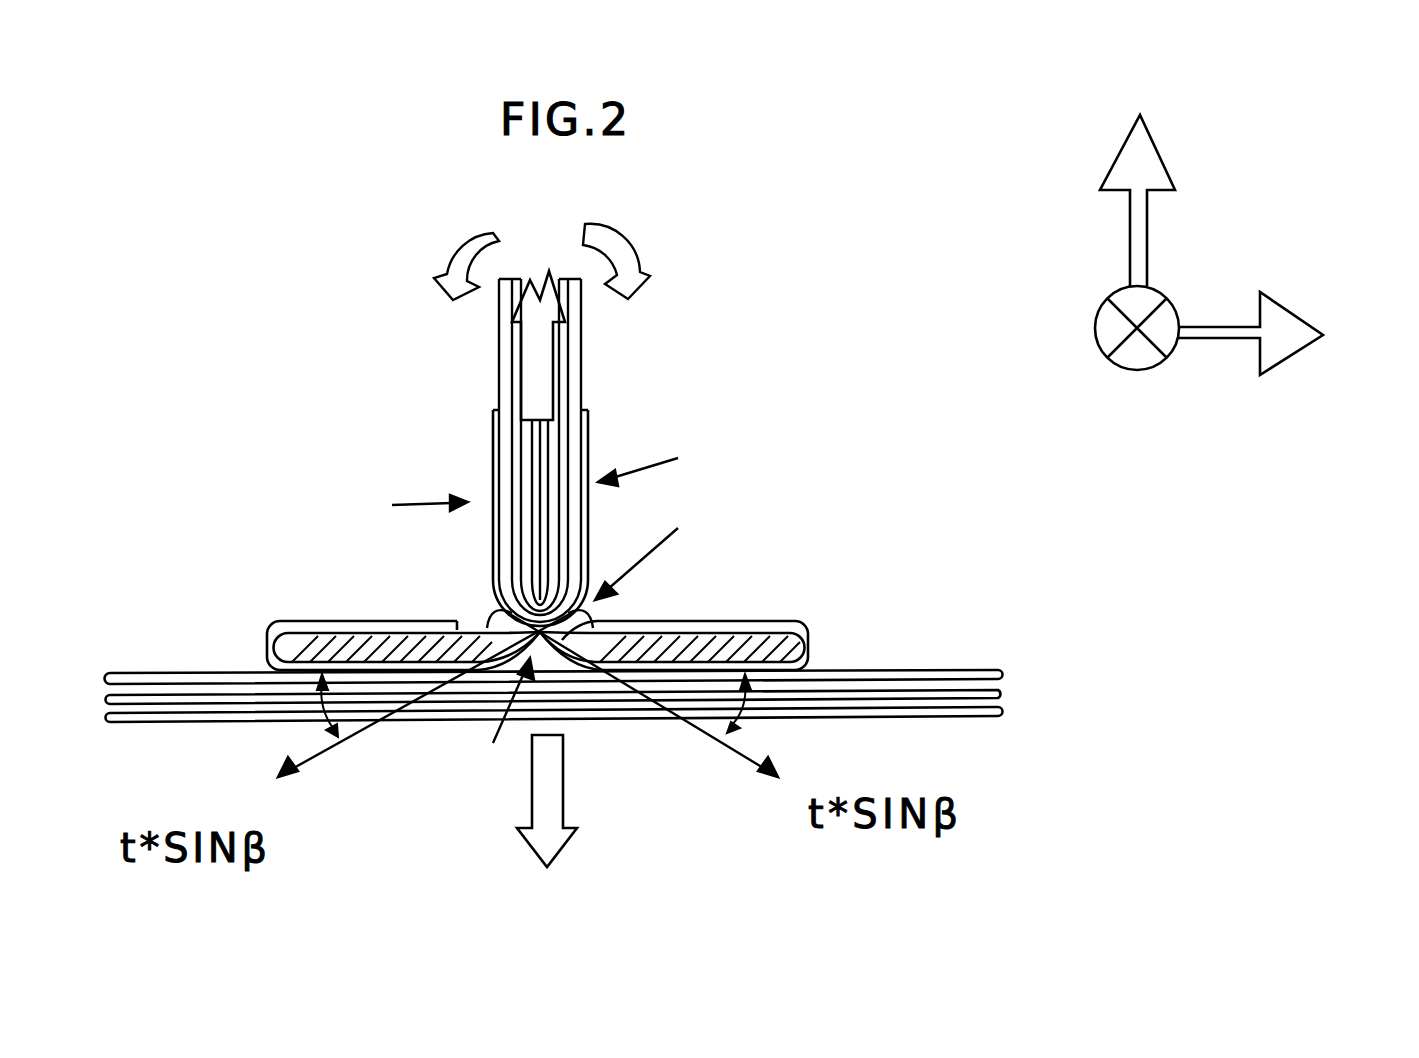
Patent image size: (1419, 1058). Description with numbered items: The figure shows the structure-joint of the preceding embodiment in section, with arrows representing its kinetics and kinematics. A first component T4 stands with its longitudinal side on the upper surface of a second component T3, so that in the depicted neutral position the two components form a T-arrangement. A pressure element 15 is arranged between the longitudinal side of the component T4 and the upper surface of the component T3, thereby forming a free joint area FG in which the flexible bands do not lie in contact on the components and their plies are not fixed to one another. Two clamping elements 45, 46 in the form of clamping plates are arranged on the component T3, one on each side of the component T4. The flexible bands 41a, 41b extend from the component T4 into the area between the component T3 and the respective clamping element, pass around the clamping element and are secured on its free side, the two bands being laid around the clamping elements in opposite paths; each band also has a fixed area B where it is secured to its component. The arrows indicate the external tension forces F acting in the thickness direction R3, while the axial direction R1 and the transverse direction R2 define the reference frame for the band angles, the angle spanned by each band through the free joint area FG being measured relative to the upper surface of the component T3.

The second component T3 is at (943, 693).
The clamping element 46 is at (327, 630).
The clamping element 45 is at (757, 648).
The pressure element 15 is at (492, 615).
The flexible band 41b is at (493, 432).
The flexible band 41a is at (588, 427).
The external tension forces F is at (575, 792).
The first component T4 is at (580, 280).
The fixed area B is at (535, 487).
The free joint area FG is at (595, 652).
The axial direction R1 is at (1125, 357).
The transverse direction R2 is at (1289, 333).
The thickness direction R3 is at (1120, 183).